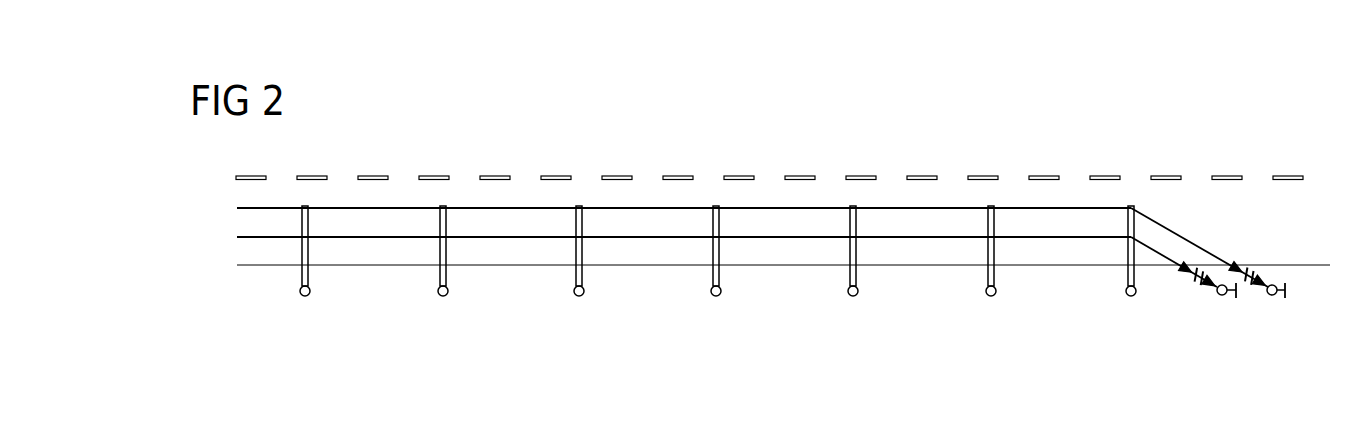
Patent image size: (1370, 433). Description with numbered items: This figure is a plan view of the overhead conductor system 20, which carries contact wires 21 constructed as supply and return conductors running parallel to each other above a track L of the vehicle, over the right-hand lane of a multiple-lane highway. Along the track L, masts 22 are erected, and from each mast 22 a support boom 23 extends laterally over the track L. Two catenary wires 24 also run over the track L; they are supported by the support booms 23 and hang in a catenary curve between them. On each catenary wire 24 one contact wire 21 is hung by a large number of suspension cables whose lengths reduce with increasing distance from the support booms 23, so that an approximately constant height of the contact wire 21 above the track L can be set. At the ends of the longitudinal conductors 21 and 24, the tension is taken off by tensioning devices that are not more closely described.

The overhead conductor system 20 is at (394, 162).
The contact wire 21 is at (798, 237).
The mast 22 is at (439, 295).
The support boom 23 is at (447, 222).
The catenary wire 24 is at (660, 237).
The track L is at (1316, 237).